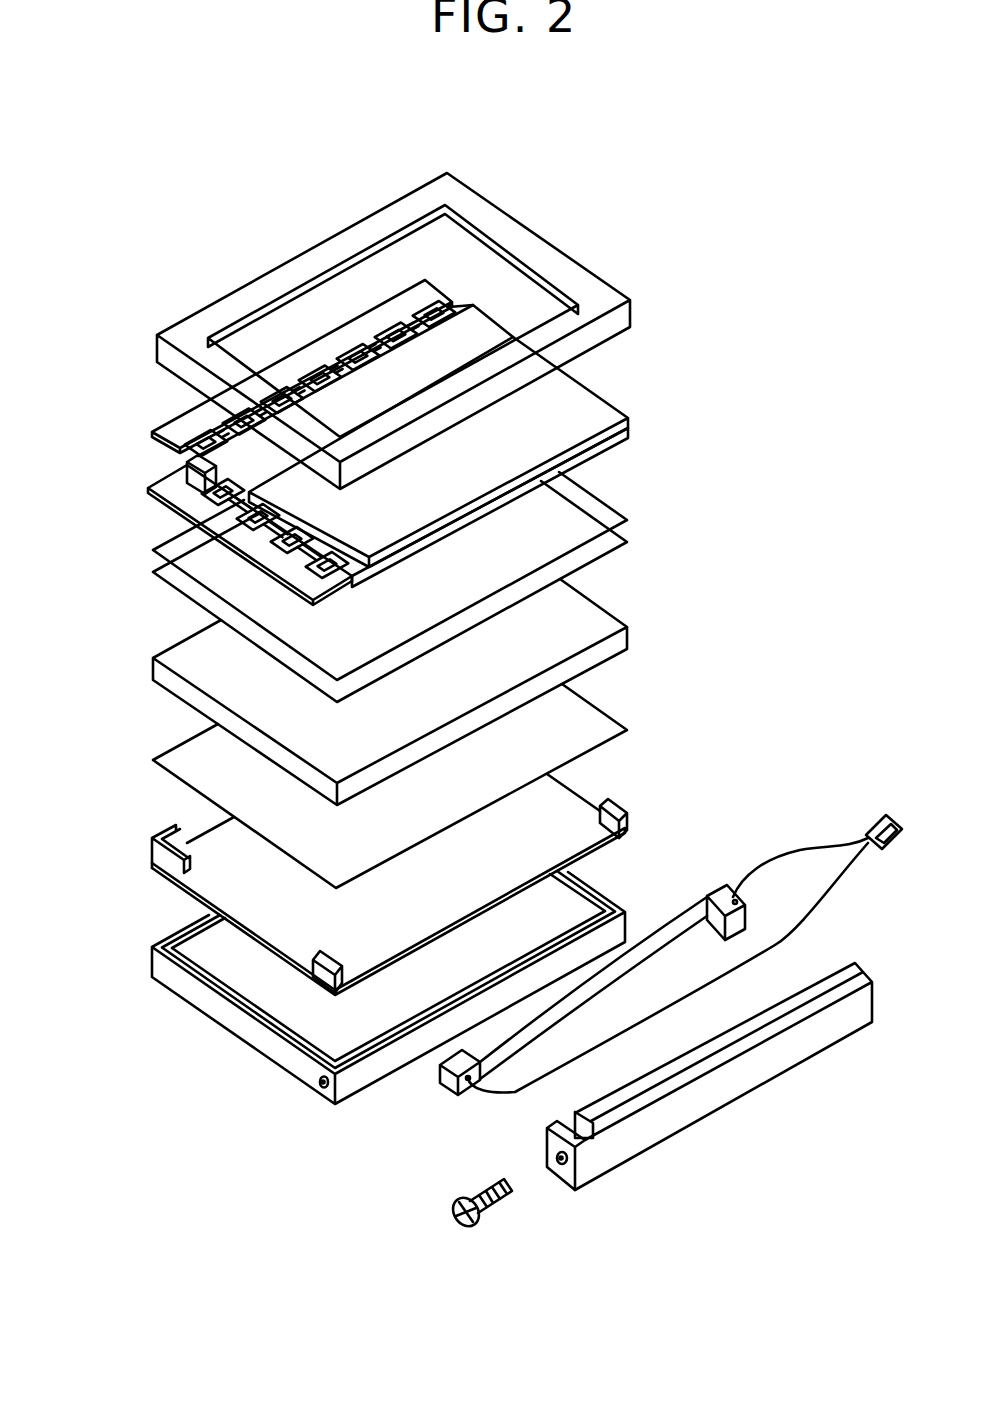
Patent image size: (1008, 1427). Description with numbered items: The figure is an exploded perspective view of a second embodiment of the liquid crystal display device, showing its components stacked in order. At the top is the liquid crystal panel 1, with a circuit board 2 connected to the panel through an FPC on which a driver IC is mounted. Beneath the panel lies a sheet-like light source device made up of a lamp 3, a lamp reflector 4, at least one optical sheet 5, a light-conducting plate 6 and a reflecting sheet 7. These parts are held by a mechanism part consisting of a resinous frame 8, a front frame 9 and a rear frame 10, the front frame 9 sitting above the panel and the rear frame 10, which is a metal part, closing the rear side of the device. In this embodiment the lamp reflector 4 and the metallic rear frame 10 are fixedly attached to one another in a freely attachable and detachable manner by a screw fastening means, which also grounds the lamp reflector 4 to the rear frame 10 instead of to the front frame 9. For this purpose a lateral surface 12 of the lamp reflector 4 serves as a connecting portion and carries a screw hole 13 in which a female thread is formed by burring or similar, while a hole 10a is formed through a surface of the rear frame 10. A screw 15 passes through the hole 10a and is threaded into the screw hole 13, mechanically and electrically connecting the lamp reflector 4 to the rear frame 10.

The liquid crystal panel 1 is at (585, 405).
The circuit board 2 is at (173, 428).
The lamp 3 is at (791, 853).
The lamp reflector 4 is at (634, 1130).
The optical sheet 5 is at (217, 605).
The light-conducting plate 6 is at (585, 618).
The reflecting sheet 7 is at (215, 780).
The resinous frame 8 is at (575, 810).
The front frame 9 is at (570, 272).
The rear frame 10 is at (362, 1040).
The hole 10a is at (318, 1087).
The lateral surface 12 is at (552, 1147).
The screw hole 13 is at (556, 1163).
The screw 15 is at (470, 1223).